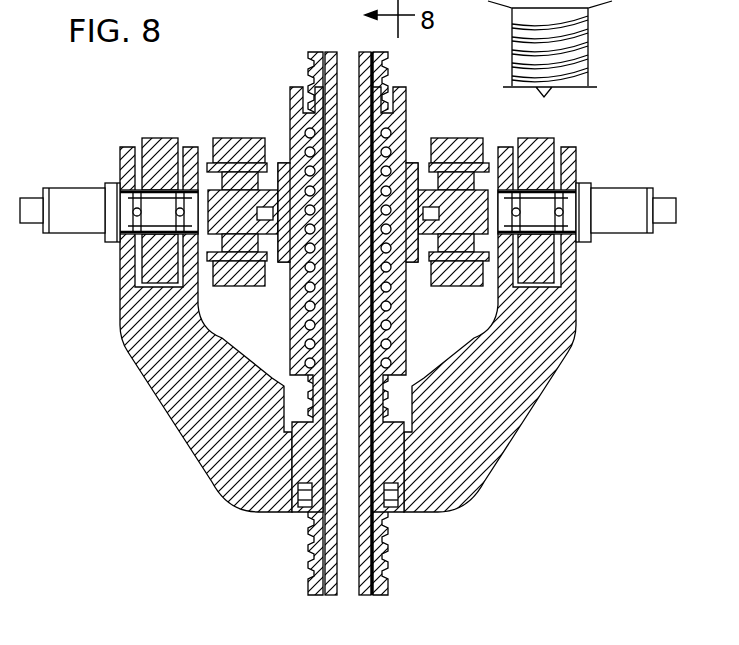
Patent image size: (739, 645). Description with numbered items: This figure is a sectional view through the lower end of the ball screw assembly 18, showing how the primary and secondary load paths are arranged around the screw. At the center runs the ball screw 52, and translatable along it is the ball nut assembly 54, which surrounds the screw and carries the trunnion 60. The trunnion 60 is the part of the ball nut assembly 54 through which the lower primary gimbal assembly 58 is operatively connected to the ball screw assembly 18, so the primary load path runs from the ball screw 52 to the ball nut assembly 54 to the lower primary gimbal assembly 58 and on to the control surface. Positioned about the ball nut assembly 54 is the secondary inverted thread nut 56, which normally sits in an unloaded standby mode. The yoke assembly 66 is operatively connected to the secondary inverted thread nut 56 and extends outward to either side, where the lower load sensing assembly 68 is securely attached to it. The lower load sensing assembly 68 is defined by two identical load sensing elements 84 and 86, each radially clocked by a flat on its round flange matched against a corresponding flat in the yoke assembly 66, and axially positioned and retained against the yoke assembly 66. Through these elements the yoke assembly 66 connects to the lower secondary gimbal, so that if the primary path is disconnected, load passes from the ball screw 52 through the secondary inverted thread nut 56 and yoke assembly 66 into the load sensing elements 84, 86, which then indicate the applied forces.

The ball screw assembly 18 is at (306, 552).
The ball screw 52 is at (388, 562).
The ball nut assembly 54 is at (407, 322).
The secondary inverted thread nut 56 is at (410, 478).
The lower primary gimbal assembly 58 is at (235, 137).
The trunnion 60 is at (403, 210).
The yoke assembly 66 is at (521, 409).
The lower load sensing assembly 68 is at (70, 188).
The load sensing element 84 is at (71, 234).
The load sensing element 86 is at (620, 238).